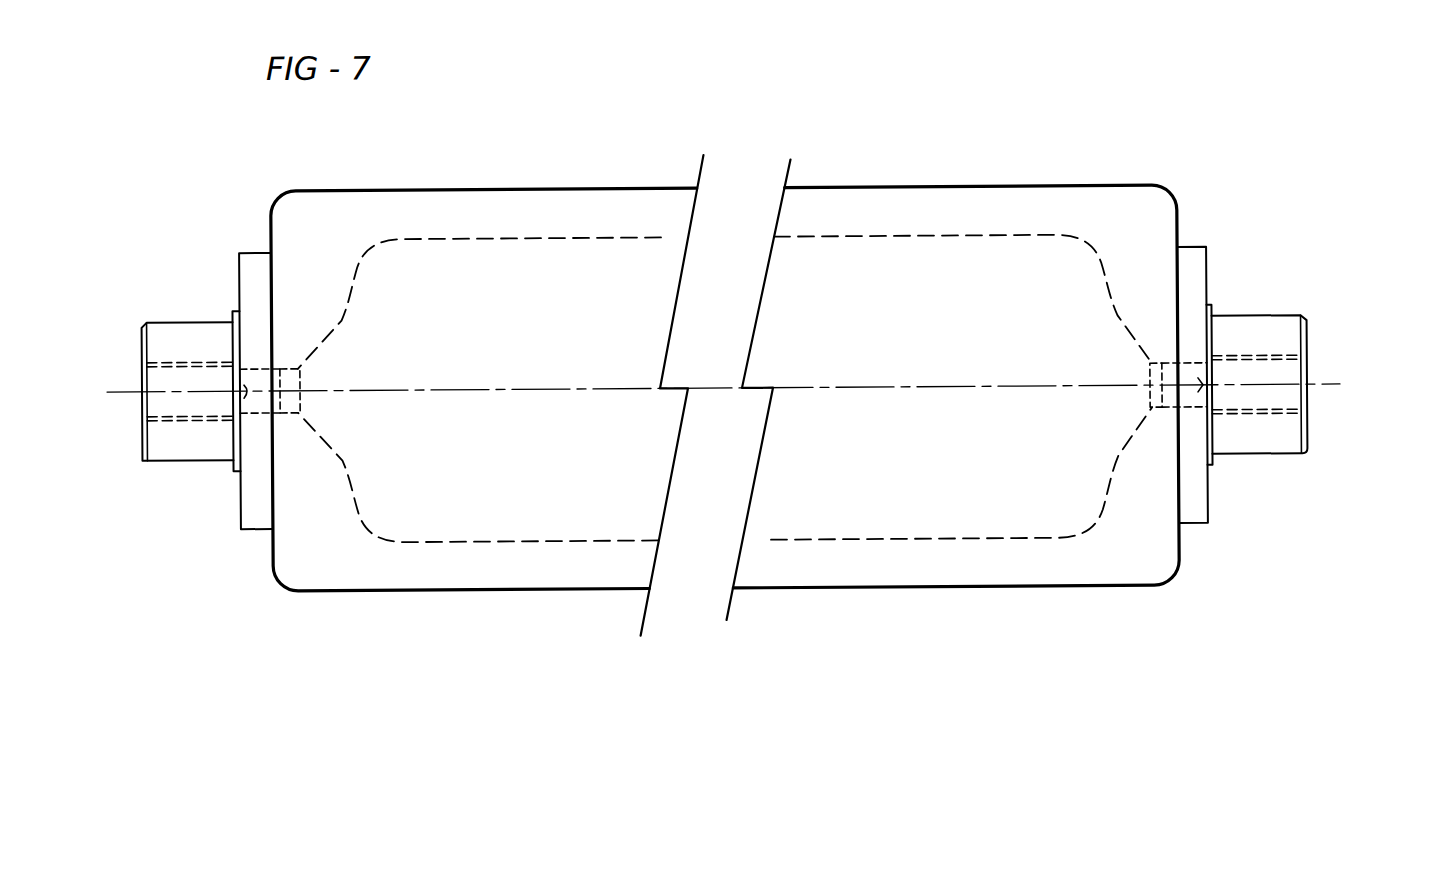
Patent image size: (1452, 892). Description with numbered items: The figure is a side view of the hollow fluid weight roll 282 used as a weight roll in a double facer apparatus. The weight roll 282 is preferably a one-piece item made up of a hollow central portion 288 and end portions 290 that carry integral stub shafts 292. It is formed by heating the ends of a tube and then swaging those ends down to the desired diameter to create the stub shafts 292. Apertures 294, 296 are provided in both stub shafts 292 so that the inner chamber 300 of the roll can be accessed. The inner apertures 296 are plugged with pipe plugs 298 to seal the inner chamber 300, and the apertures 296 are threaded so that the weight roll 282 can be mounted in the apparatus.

The weight roll 282 is at (1003, 168).
The hollow central portion 288 is at (635, 200).
The end portions 290 is at (1163, 265).
The stub shafts 292 is at (1282, 428).
The apertures 294 is at (202, 366).
The inner apertures 296 is at (290, 366).
The pipe plugs 298 is at (1212, 377).
The inner chamber 300 is at (880, 502).